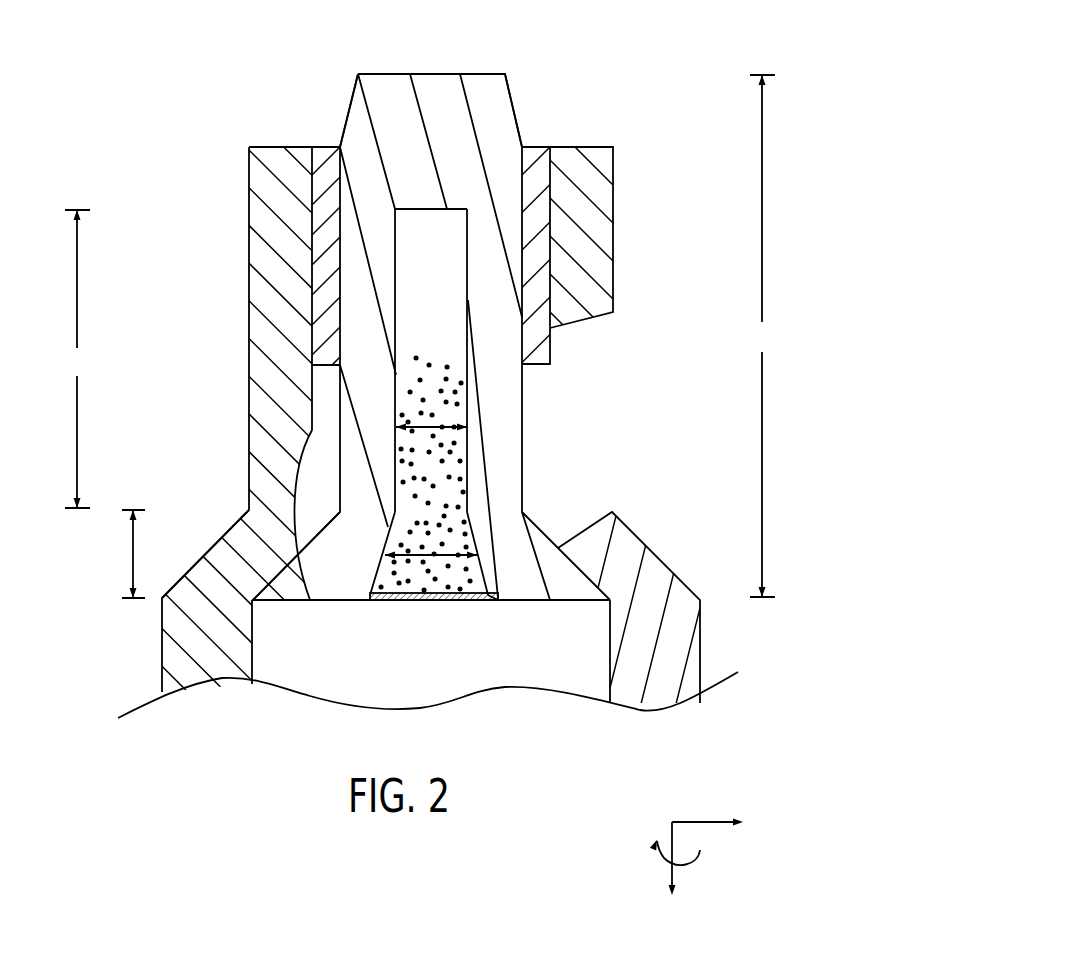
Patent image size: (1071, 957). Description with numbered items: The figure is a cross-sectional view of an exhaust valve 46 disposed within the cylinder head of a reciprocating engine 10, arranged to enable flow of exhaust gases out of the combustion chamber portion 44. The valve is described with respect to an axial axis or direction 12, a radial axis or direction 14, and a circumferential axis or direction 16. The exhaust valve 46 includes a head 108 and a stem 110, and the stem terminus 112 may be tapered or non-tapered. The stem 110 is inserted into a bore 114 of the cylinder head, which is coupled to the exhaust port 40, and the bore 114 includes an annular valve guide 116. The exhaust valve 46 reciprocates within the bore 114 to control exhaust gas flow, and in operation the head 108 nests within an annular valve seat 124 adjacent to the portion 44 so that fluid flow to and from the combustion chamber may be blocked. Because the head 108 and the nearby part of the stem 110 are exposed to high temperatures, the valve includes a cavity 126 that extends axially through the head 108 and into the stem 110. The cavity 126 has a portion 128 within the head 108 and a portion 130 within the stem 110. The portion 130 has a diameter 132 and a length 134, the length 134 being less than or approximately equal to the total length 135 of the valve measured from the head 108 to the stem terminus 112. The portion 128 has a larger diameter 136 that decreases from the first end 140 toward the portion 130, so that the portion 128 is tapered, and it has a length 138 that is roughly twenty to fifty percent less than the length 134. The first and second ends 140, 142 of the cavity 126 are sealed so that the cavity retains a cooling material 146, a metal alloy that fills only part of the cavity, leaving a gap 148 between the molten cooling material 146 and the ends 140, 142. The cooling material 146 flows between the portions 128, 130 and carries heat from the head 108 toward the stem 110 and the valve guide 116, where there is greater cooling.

The engine 10 is at (200, 47).
The axial axis or direction 12 is at (672, 830).
The radial axis or direction 14 is at (707, 822).
The circumferential axis or direction 16 is at (687, 863).
The exhaust port 40 is at (578, 436).
The portion 44 is at (386, 697).
The exhaust valve 46 is at (533, 102).
The head 108 is at (560, 601).
The stem 110 is at (348, 113).
The stem terminus 112 is at (506, 74).
The bore 114 is at (327, 140).
The valve guide 116 is at (552, 350).
The valve seat 124 is at (215, 551).
The cavity 126 is at (418, 527).
The portion 128 is at (488, 512).
The portion 130 is at (387, 275).
The diameter 132 is at (432, 424).
The length 134 is at (78, 359).
The total length 135 is at (763, 336).
The diameter 136 is at (433, 576).
The length 138 is at (133, 557).
The first end 140 is at (505, 595).
The second end 142 is at (472, 203).
The cooling material 146 is at (443, 568).
The gap 148 is at (446, 279).